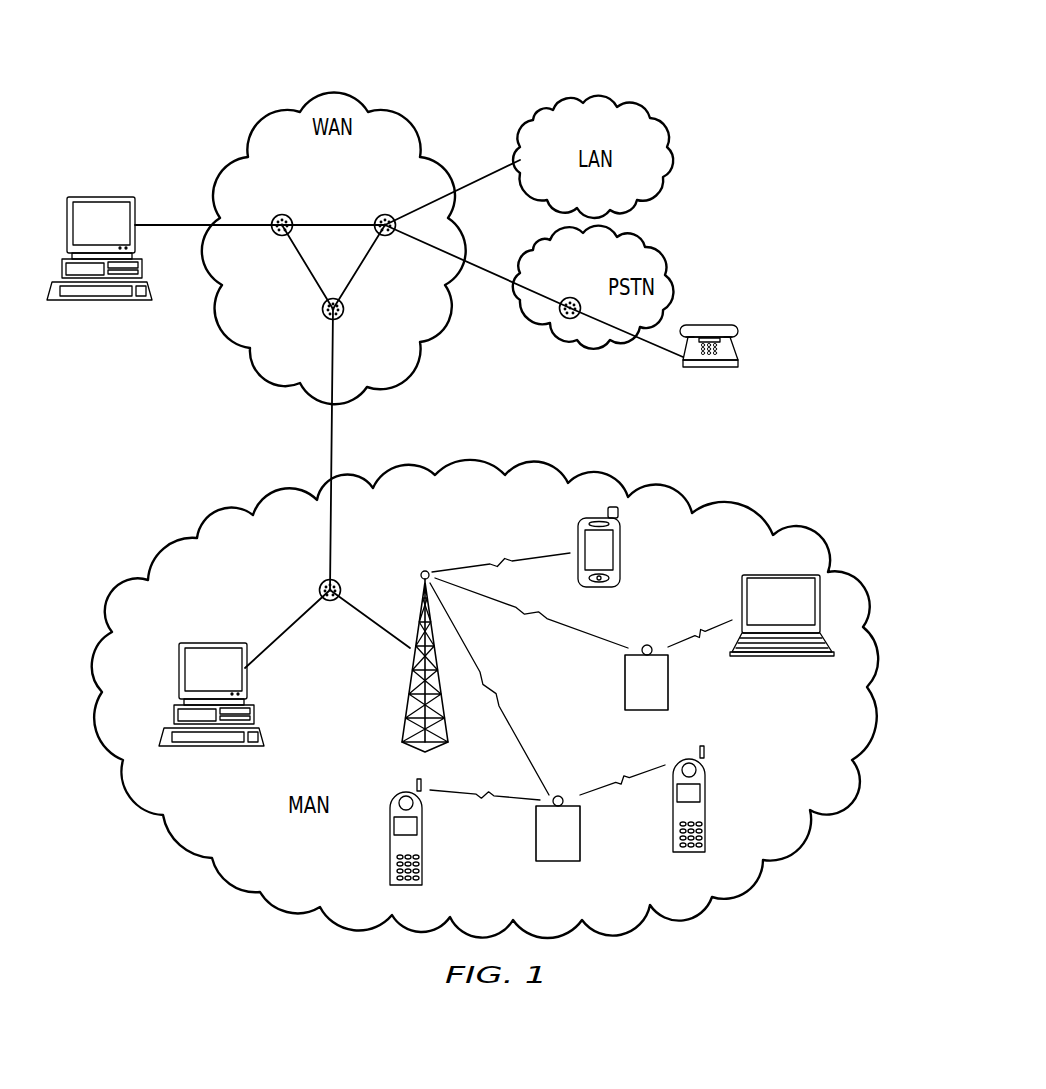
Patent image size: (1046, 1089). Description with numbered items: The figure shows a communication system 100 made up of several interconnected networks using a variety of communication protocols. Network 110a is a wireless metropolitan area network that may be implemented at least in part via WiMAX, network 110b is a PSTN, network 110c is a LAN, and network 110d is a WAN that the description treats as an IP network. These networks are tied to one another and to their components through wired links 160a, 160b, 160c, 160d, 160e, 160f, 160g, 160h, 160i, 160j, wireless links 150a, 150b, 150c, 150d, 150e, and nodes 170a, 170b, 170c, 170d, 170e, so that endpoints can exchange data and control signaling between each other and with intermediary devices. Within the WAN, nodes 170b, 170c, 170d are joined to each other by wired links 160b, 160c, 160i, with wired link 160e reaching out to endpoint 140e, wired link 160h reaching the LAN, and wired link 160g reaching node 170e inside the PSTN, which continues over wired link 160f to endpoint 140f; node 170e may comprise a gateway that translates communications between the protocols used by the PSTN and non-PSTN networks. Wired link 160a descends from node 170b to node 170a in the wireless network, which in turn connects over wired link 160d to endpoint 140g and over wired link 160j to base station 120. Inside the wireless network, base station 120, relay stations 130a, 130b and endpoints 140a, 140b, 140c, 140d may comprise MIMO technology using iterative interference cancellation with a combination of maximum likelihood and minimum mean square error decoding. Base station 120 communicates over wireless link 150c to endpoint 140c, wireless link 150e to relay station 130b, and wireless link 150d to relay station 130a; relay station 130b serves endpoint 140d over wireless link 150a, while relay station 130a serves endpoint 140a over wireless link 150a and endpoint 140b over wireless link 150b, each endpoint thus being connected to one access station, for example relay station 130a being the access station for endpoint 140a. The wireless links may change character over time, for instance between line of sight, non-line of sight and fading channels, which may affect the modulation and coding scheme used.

The communication system 100 is at (643, 60).
The wireless network (MAN) 110a is at (212, 505).
The PSTN network 110b is at (562, 343).
The LAN network 110c is at (678, 158).
The WAN network 110d is at (262, 114).
The base station 120 is at (405, 708).
The relay station 130a is at (556, 863).
The relay station 130b is at (670, 690).
The endpoint 140a is at (388, 848).
The endpoint 140b is at (710, 806).
The endpoint 140c is at (620, 548).
The endpoint 140d is at (800, 657).
The endpoint 140e is at (108, 192).
The endpoint 140f is at (706, 322).
The endpoint 140g is at (225, 640).
The wireless link 150a is at (700, 623).
The wireless link 150b is at (625, 775).
The wireless link 150c is at (521, 549).
The wireless link 150d is at (509, 725).
The wireless link 150e is at (540, 626).
The wired link 160a is at (340, 541).
The wired link 160b is at (299, 273).
The wired link 160c is at (368, 272).
The wired link 160d is at (285, 635).
The wired link 160e is at (186, 222).
The wired link 160f is at (661, 353).
The wired link 160g is at (491, 265).
The wired link 160h is at (481, 179).
The wired link 160i is at (345, 222).
The wired link 160j is at (375, 626).
The node 170a is at (318, 585).
The node 170b is at (345, 314).
The node 170c is at (280, 213).
The node 170d is at (388, 213).
The node (gateway) 170e is at (574, 296).